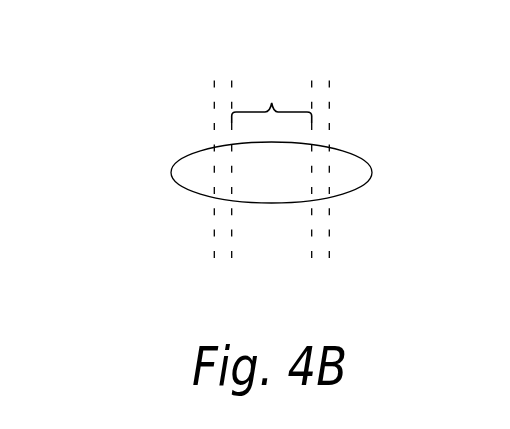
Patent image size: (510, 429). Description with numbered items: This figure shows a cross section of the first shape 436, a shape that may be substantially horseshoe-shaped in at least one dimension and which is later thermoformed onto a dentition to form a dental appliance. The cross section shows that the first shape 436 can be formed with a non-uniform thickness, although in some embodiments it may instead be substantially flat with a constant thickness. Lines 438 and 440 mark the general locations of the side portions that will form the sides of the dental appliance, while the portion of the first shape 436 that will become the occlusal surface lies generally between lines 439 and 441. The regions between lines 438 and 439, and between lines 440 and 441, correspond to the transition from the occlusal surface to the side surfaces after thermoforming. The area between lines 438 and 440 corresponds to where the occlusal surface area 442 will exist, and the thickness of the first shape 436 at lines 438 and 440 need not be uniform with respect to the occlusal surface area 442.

The first shape 436 is at (153, 151).
The line 438 is at (214, 109).
The line 439 is at (232, 83).
The line 440 is at (330, 110).
The line 441 is at (311, 83).
The occlusal surface area 442 is at (272, 97).